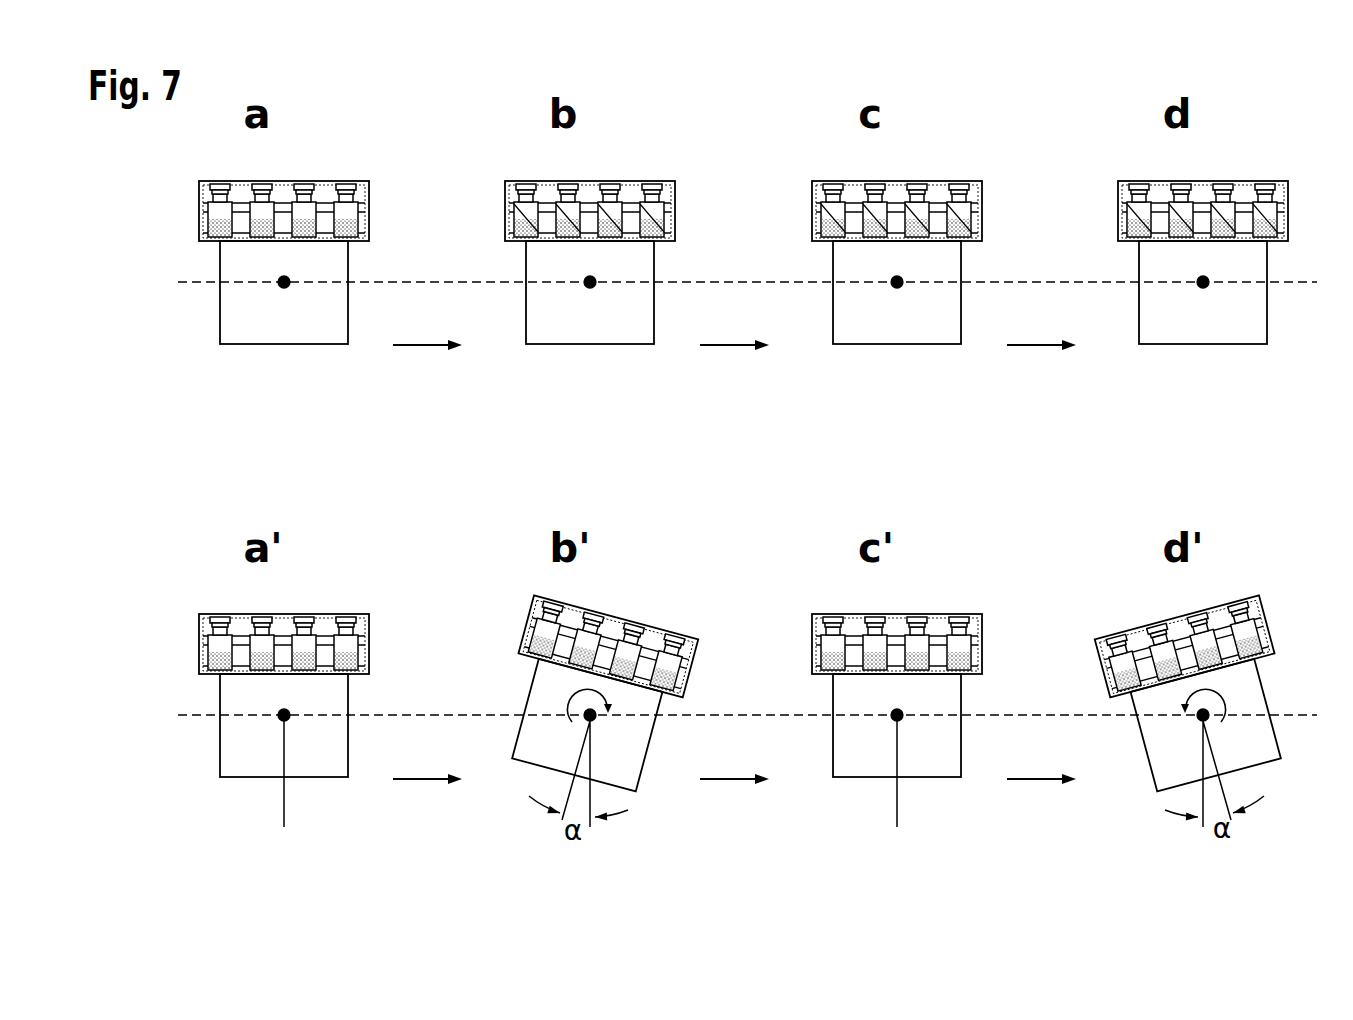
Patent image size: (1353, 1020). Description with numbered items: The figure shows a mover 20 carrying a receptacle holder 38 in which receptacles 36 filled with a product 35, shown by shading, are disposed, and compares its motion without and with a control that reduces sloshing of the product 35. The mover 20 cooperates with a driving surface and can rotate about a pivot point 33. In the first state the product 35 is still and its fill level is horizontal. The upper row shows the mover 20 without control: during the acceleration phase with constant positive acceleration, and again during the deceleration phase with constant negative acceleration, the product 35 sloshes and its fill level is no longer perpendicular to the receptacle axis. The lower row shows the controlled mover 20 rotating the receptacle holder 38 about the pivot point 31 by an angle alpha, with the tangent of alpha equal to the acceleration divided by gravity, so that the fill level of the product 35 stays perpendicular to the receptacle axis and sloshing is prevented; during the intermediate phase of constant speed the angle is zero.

The mover 20 is at (768, 550).
The pivot point 31 is at (734, 600).
The pivot point 33 is at (755, 568).
The product 35 is at (737, 442).
The receptacles 36 is at (737, 404).
The receptacle holder 38 is at (737, 441).